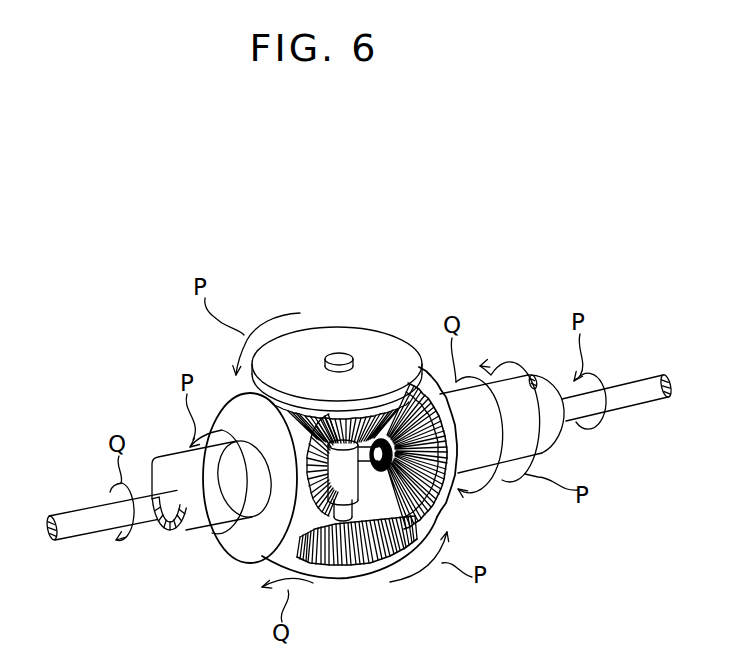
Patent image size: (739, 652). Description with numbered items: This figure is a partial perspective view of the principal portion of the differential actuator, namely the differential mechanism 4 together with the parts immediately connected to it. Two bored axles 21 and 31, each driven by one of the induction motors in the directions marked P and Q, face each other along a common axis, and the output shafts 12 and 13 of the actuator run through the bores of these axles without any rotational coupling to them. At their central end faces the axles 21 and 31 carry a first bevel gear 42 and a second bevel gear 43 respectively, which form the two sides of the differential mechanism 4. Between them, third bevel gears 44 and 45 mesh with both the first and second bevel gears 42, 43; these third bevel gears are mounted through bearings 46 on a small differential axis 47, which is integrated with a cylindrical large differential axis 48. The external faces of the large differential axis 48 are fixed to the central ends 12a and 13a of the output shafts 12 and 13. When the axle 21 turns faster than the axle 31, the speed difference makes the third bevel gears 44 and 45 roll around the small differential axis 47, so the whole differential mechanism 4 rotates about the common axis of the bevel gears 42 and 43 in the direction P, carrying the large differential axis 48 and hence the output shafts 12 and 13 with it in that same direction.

The differential mechanism 4 is at (397, 313).
The output shaft 12 is at (88, 507).
The central end of output shaft 12a is at (316, 490).
The output shaft 13 is at (630, 385).
The central end of output shaft 13a is at (366, 445).
The bored axle 21 is at (175, 463).
The bored axle 31 is at (502, 390).
The first bevel gear 42 is at (230, 405).
The second bevel gear 43 is at (457, 500).
The third bevel gear 44 is at (318, 340).
The third bevel gear 45 is at (350, 570).
The bearing 46 is at (393, 555).
The small differential axis 47 is at (316, 513).
The large differential axis 48 is at (305, 400).